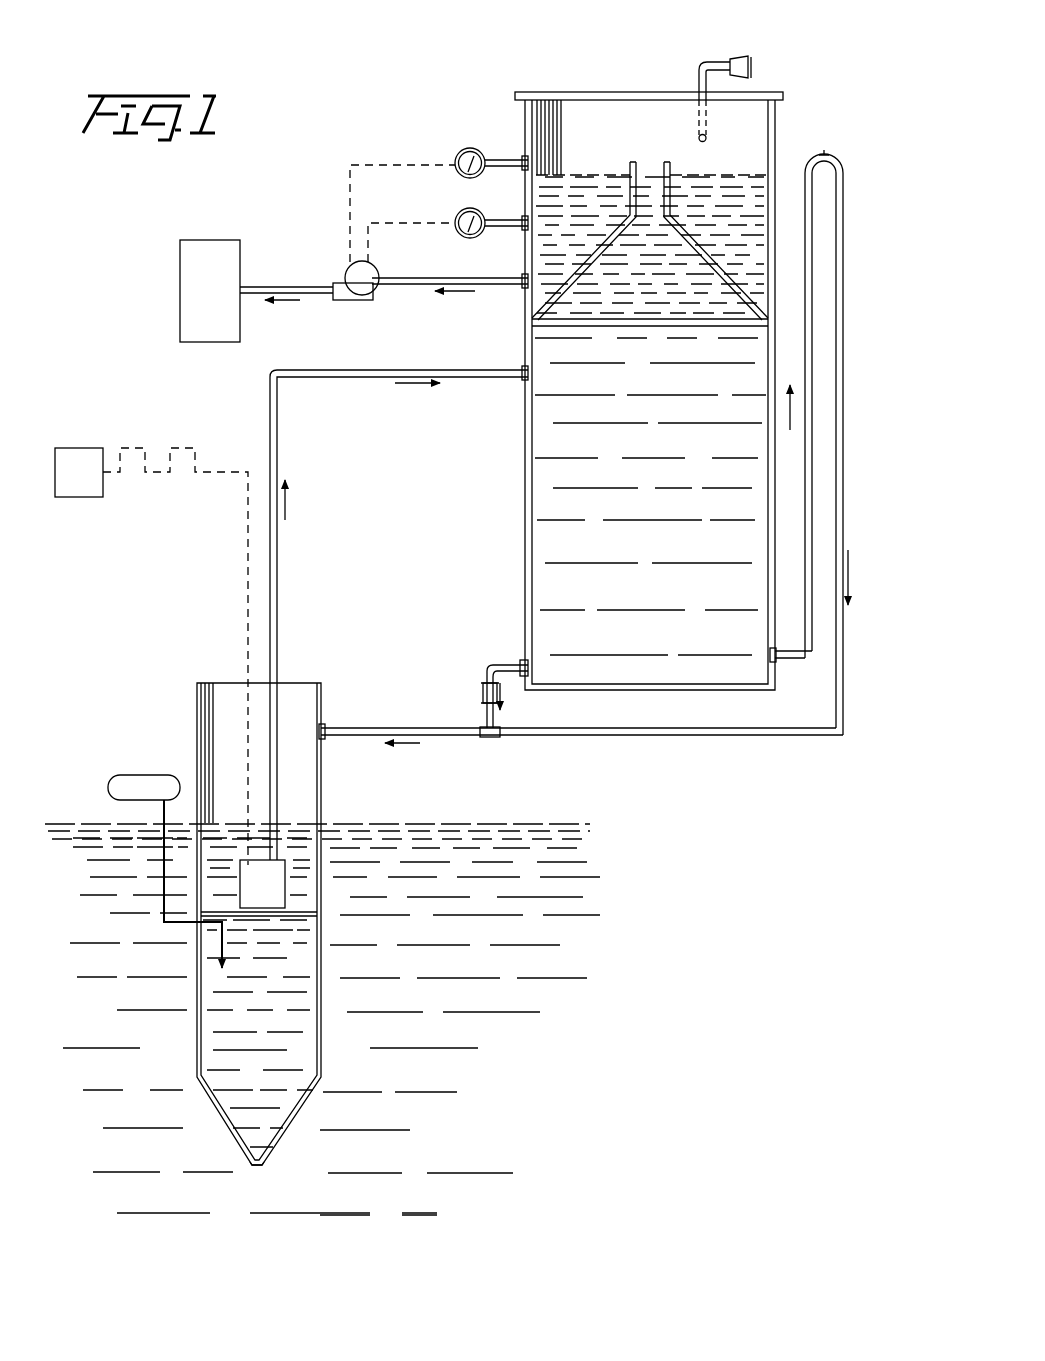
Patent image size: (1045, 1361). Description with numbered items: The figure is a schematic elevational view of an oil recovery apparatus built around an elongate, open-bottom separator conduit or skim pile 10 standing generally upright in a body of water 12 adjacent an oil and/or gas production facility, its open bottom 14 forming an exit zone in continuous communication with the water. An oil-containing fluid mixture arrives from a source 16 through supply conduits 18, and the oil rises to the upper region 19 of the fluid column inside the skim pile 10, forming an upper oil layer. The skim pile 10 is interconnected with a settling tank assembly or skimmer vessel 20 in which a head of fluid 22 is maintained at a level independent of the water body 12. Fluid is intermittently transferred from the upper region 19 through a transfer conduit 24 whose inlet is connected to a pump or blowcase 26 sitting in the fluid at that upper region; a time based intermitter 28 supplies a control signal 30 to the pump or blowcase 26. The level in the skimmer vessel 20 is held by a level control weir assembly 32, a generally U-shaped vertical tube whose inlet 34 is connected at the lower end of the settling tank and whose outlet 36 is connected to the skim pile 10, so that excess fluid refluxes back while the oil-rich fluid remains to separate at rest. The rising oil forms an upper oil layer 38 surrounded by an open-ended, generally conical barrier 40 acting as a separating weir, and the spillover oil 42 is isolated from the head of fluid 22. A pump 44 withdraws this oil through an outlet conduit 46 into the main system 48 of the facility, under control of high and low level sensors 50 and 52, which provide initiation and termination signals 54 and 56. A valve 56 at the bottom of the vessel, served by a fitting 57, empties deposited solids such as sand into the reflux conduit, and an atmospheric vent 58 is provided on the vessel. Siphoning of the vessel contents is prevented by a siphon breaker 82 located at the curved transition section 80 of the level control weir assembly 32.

The skim pile 10 is at (180, 748).
The body of water 12 is at (468, 826).
The open bottom 14 is at (258, 1168).
The source 16 is at (125, 782).
The supply conduits 18 is at (162, 900).
The upper region 19 is at (300, 925).
The settling tank assembly 20 is at (513, 112).
The head of fluid 22 is at (578, 533).
The transfer conduit 24 is at (345, 378).
The pump or blowcase 26 is at (295, 856).
The time based intermitter 28 is at (84, 452).
The control signal 30 is at (210, 470).
The level control weir assembly 32 is at (835, 160).
The inlet 34 is at (777, 674).
The outlet 36 is at (325, 726).
The upper oil layer 38 is at (588, 292).
The conical barrier 40 is at (672, 212).
The spillover oil 42 is at (602, 190).
The pump 44 is at (343, 283).
The outlet conduit 46 is at (410, 290).
The main system 48 is at (183, 275).
The high level sensor 50 is at (458, 150).
The low level sensor 52 is at (458, 218).
The initiation signal 54 is at (366, 160).
The termination signal / valve 56 is at (378, 222).
The fitting 57 is at (523, 664).
The atmospheric vent 58 is at (695, 68).
The transition section 80 is at (824, 172).
The siphon breaker 82 is at (822, 156).